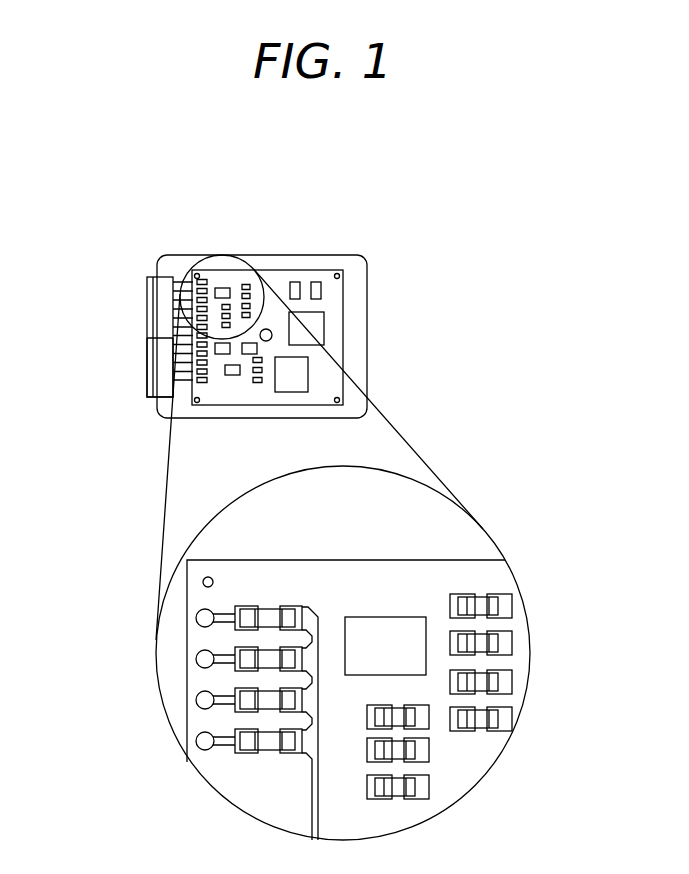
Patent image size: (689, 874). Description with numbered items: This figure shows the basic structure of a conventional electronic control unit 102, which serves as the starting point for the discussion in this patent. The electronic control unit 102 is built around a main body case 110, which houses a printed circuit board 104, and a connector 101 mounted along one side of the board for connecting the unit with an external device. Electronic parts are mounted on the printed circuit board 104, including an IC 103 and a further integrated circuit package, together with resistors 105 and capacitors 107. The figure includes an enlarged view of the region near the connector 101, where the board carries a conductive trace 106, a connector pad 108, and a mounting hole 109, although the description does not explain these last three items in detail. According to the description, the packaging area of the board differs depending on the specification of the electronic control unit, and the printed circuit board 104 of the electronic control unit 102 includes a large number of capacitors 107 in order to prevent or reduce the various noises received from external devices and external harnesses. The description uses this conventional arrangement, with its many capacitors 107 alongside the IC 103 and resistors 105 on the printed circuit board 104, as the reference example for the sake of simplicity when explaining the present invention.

The connector 101 is at (150, 288).
The electronic control unit 102 is at (193, 262).
The IC 103 is at (312, 320).
The printed circuit board 104 is at (323, 380).
The resistors 105 is at (483, 600).
The conductive trace 106 is at (312, 820).
The capacitors 107 is at (260, 748).
The connector pad 108 is at (200, 745).
The mounting hole 109 is at (204, 580).
The main body case 110 is at (163, 410).